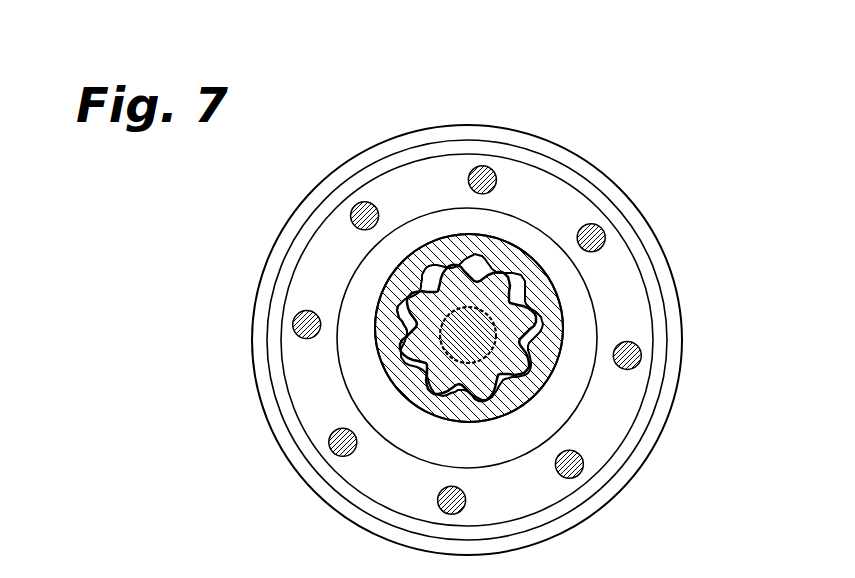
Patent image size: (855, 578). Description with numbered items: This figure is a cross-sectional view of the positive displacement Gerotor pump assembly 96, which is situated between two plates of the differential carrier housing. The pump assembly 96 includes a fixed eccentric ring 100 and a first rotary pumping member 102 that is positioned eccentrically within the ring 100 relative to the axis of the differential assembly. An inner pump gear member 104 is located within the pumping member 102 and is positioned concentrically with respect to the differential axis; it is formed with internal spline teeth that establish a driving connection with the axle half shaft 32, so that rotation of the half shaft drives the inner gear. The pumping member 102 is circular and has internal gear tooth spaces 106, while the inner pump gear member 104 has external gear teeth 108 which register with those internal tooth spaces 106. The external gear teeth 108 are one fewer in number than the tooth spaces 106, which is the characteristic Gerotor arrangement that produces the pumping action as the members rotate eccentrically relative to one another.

The positive displacement Gerotor pump assembly 96 is at (453, 112).
The fixed eccentric ring 100 is at (575, 293).
The first rotary pumping member 102 is at (425, 278).
The inner pump gear member 104 is at (477, 277).
The internal gear tooth spaces 106 is at (402, 318).
The external gear teeth 108 is at (520, 407).
The axle half shaft 32 is at (478, 338).